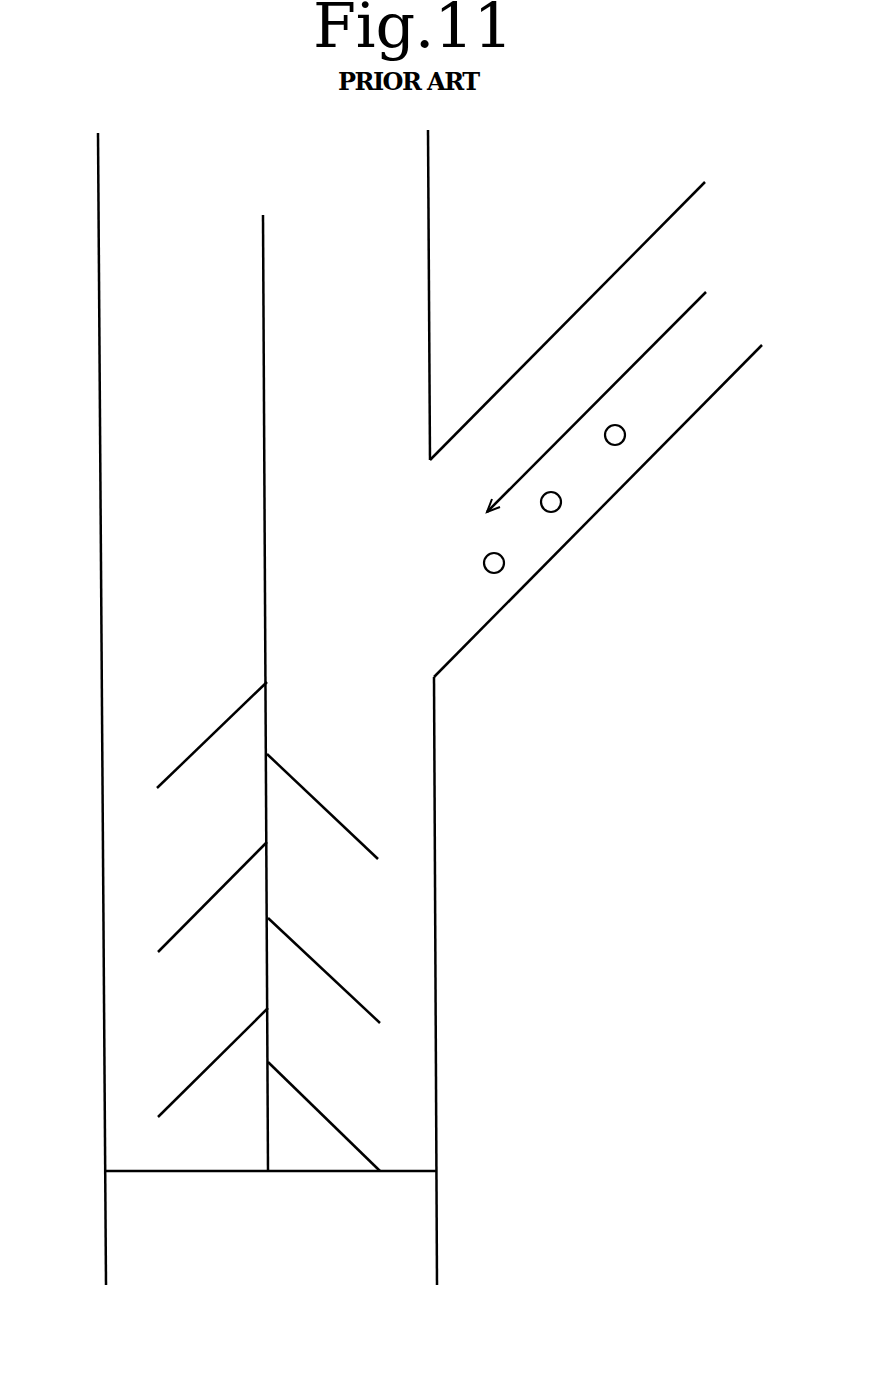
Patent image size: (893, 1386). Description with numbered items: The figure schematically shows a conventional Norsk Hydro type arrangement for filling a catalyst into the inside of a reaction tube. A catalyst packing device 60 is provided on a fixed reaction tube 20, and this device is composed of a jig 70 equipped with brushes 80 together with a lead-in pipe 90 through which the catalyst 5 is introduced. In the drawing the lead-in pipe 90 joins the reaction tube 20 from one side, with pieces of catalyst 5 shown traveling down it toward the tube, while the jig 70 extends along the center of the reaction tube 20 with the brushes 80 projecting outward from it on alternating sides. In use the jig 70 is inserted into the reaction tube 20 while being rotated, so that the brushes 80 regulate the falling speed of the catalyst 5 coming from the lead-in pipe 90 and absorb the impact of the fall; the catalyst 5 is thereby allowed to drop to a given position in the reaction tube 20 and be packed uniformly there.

The catalyst 5 is at (502, 562).
The reaction tube 20 is at (437, 1204).
The catalyst packing device 60 is at (437, 975).
The jig 70 is at (263, 350).
The brushes 80 is at (212, 732).
The lead-in pipe 90 is at (540, 347).